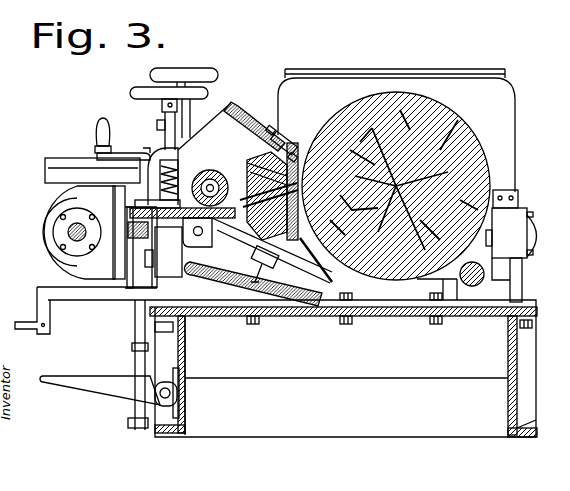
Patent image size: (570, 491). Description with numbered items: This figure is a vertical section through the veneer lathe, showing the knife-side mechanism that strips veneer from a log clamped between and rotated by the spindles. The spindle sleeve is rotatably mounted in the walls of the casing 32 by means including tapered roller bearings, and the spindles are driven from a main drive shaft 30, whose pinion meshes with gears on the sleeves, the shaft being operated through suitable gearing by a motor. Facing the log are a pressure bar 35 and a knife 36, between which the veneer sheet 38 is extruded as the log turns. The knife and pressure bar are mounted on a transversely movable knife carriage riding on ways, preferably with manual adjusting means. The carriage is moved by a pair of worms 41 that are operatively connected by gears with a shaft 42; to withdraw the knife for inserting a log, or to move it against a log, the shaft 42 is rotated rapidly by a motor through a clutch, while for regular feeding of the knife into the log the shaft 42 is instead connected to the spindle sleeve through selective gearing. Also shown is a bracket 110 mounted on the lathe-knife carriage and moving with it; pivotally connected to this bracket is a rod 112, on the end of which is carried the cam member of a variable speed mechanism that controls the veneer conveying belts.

The main drive shaft 30 is at (476, 279).
The casing 32 is at (498, 103).
The pressure bar 35 is at (293, 170).
The knife 36 is at (286, 222).
The veneer sheet 38 is at (245, 220).
The worm 41 is at (133, 273).
The shaft 42 is at (72, 240).
The bracket 110 is at (123, 294).
The rod 112 is at (78, 308).